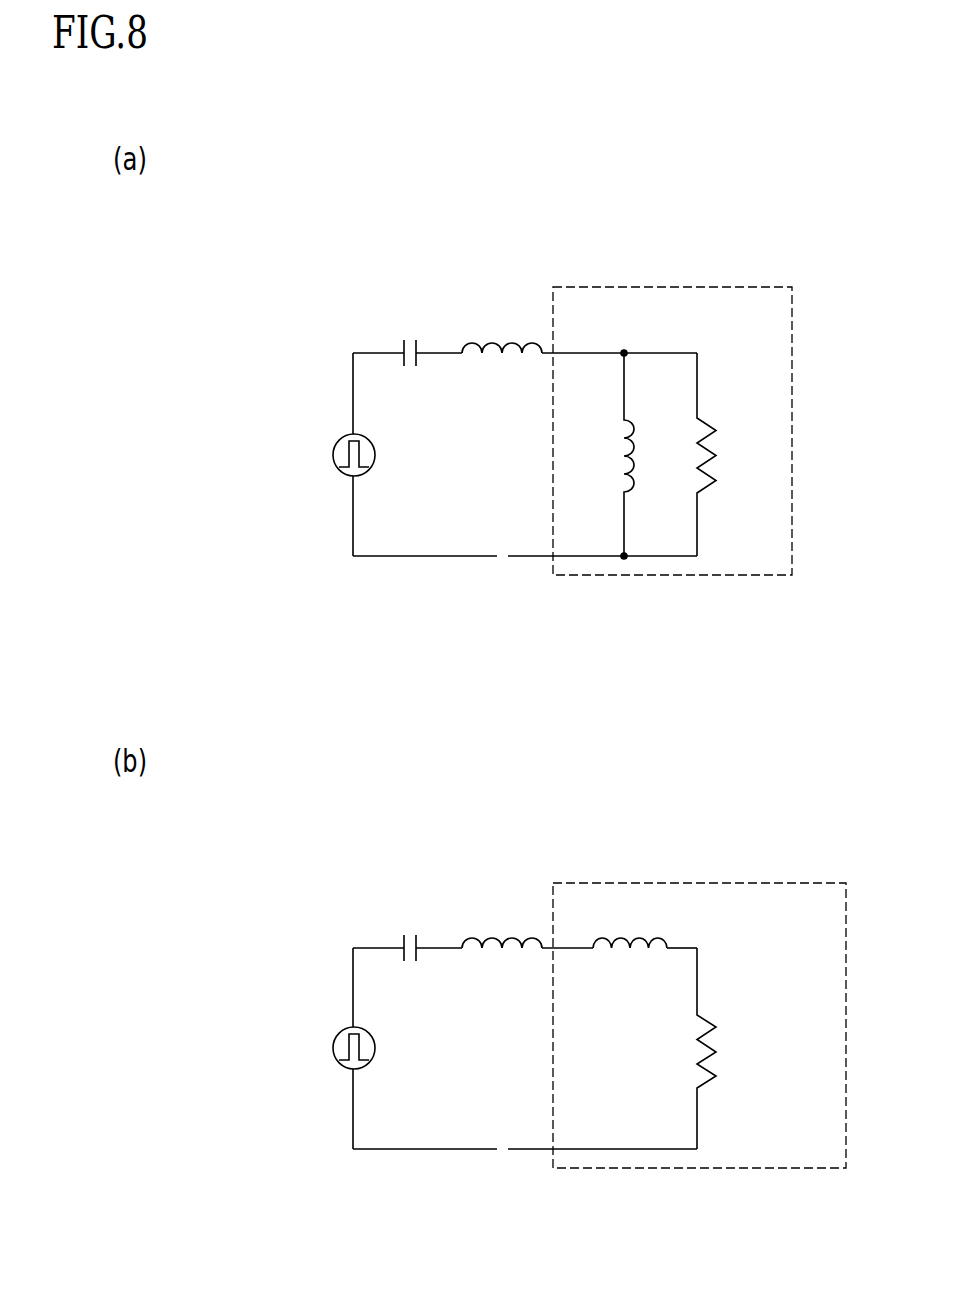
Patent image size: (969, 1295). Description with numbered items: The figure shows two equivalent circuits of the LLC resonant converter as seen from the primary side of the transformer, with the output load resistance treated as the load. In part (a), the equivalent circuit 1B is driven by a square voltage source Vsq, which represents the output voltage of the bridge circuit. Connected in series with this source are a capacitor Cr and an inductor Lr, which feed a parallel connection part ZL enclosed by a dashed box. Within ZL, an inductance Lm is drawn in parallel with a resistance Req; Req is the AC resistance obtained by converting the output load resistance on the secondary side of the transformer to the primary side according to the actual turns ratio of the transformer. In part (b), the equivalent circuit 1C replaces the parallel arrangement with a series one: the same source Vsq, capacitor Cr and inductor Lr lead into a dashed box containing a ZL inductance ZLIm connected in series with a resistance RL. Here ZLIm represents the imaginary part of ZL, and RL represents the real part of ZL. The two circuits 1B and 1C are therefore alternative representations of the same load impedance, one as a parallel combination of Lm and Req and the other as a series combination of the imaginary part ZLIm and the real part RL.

The equivalent circuit 1B is at (214, 306).
The equivalent circuit 1C is at (213, 896).
The resonant capacitor Cr is at (413, 329).
The resonant inductor Lr is at (502, 325).
The square voltage source Vsq is at (330, 452).
The magnetizing inductance Lm is at (603, 454).
The AC resistance Req is at (734, 454).
The parallel connection part ZL is at (672, 431).
The imaginary part of ZL ZLIm is at (632, 919).
The real part of ZL RL is at (761, 1048).